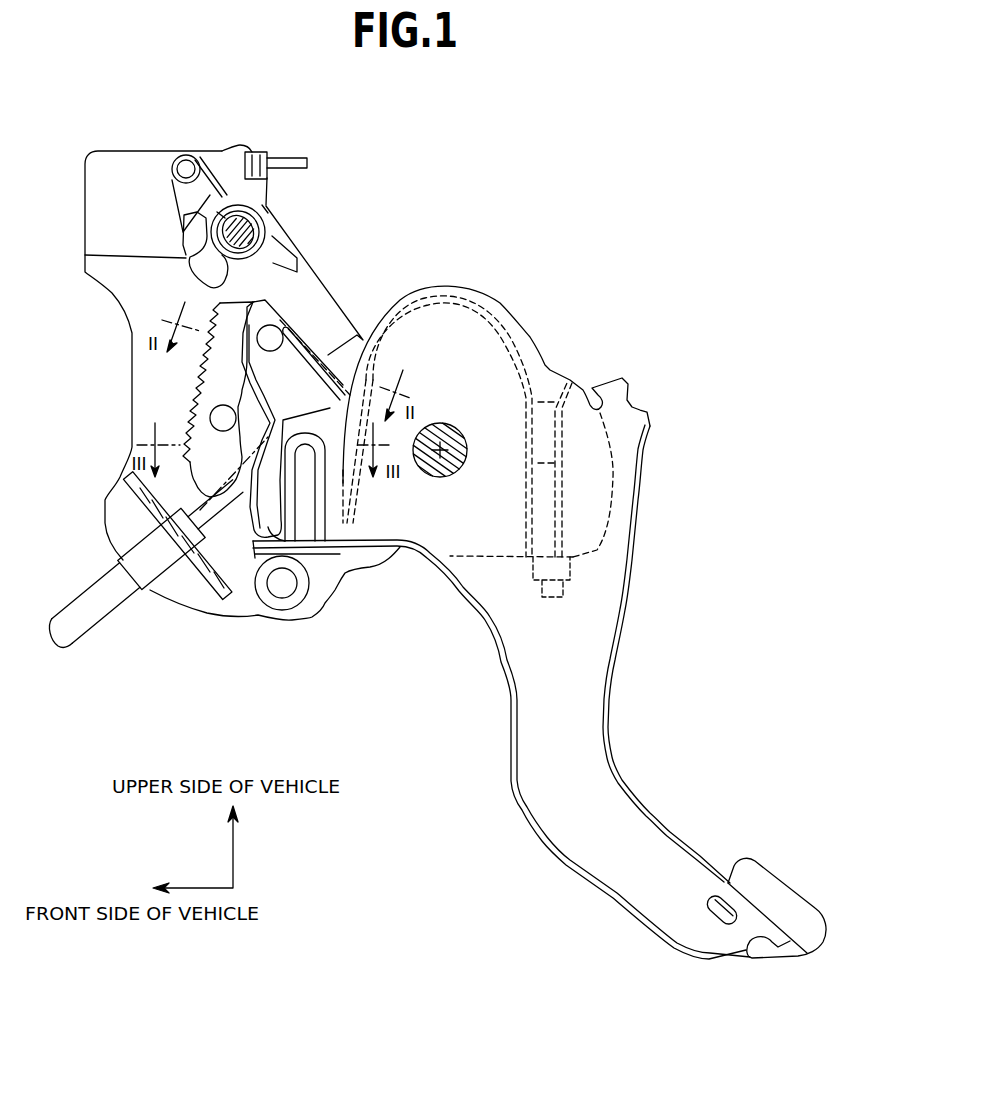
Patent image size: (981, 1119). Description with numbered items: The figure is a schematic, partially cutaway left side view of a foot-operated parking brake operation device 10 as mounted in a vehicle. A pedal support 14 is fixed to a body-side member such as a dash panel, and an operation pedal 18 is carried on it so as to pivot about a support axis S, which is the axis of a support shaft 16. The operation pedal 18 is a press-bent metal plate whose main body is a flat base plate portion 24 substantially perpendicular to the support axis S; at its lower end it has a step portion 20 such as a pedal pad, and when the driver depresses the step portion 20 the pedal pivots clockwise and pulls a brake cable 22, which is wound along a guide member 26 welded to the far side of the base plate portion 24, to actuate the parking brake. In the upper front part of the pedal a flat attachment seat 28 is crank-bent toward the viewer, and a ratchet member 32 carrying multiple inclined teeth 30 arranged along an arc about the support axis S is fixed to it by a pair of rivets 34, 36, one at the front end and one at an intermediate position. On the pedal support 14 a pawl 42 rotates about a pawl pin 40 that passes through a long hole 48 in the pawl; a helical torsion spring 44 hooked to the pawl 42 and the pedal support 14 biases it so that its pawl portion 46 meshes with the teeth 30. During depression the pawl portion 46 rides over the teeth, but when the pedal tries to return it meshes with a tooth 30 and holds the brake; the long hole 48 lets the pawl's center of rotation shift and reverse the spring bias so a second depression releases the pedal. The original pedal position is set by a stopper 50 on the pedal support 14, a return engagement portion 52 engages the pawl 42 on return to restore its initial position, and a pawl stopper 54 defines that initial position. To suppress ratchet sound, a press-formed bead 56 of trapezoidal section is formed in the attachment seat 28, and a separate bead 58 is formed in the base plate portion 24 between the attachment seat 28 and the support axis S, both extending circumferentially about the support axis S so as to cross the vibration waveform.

The foot-operated parking brake operation device 10 is at (603, 210).
The pedal support 14 is at (158, 556).
The support shaft 16 is at (412, 541).
The operation pedal 18 is at (539, 692).
The step portion 20 is at (783, 903).
The brake cable 22 is at (213, 520).
The base plate portion 24 is at (590, 665).
The guide member 26 is at (478, 300).
The attachment seat 28 is at (154, 399).
The teeth 30 is at (198, 405).
The ratchet member 32 is at (218, 388).
The rivet 34 is at (290, 330).
The rivet 36 is at (210, 411).
The pawl pin 40 is at (213, 238).
The pawl 42 is at (242, 166).
The helical torsion spring 44 is at (172, 157).
The pawl portion 46 is at (298, 262).
The long hole 48 is at (266, 228).
The stopper 50 is at (292, 600).
The return engagement portion 52 is at (86, 272).
The pawl stopper 54 is at (262, 152).
The bead 56 is at (335, 303).
The bead 58 is at (313, 513).
The support axis S is at (452, 458).